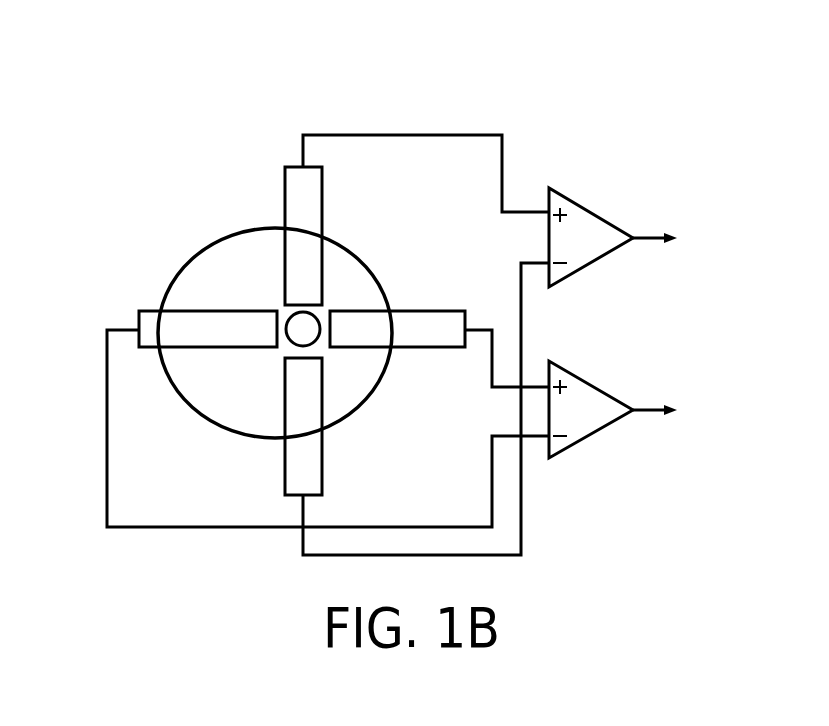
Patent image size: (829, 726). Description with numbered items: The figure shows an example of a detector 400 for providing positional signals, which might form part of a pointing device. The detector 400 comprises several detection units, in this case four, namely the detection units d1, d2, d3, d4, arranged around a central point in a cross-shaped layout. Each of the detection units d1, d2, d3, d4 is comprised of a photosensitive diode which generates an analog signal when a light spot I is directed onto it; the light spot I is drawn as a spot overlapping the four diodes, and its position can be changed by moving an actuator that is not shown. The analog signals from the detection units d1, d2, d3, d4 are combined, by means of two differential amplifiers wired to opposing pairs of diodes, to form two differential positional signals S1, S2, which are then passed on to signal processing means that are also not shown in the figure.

The detector 400 is at (387, 306).
The detection unit d1 is at (297, 207).
The detection unit d2 is at (417, 323).
The detection unit d3 is at (303, 475).
The detection unit d4 is at (150, 322).
The light spot I is at (165, 397).
The differential positional signal S1 is at (674, 238).
The differential positional signal S2 is at (674, 410).